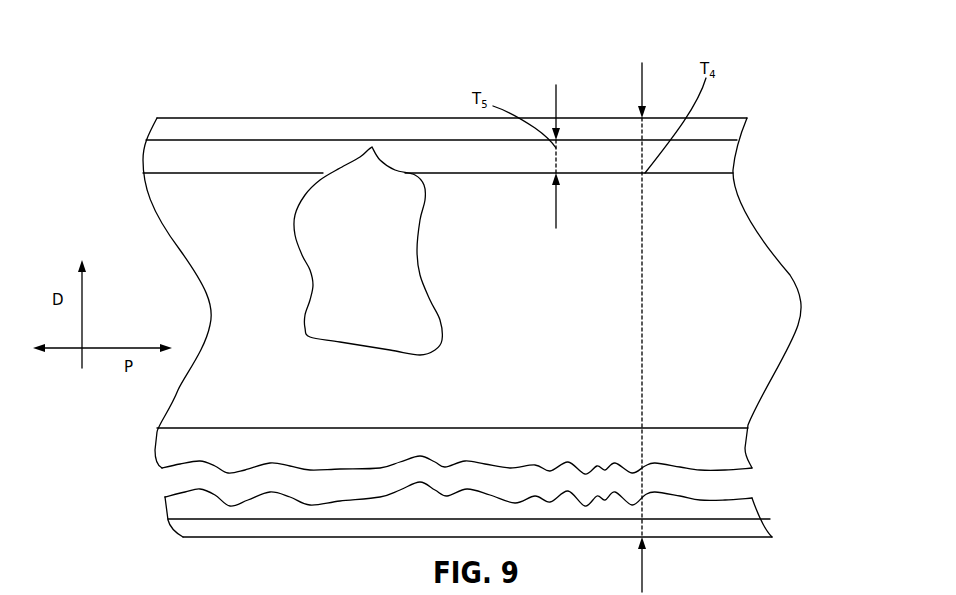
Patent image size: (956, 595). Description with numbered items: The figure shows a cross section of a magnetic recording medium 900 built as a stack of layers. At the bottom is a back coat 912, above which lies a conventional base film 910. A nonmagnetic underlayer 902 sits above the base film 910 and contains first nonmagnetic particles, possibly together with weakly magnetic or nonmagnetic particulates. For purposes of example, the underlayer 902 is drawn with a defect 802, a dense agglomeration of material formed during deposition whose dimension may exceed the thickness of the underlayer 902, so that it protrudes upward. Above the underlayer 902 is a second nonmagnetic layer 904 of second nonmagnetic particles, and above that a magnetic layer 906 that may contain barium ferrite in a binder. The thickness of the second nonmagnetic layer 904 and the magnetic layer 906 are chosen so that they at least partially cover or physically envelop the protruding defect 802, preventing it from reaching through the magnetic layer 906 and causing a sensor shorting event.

The magnetic recording medium 900 is at (108, 52).
The defect 802 is at (368, 251).
The nonmagnetic underlayer 902 is at (775, 255).
The second nonmagnetic layer 904 is at (734, 160).
The magnetic layer 906 is at (745, 121).
The base film 910 is at (752, 455).
The back coat 912 is at (770, 528).